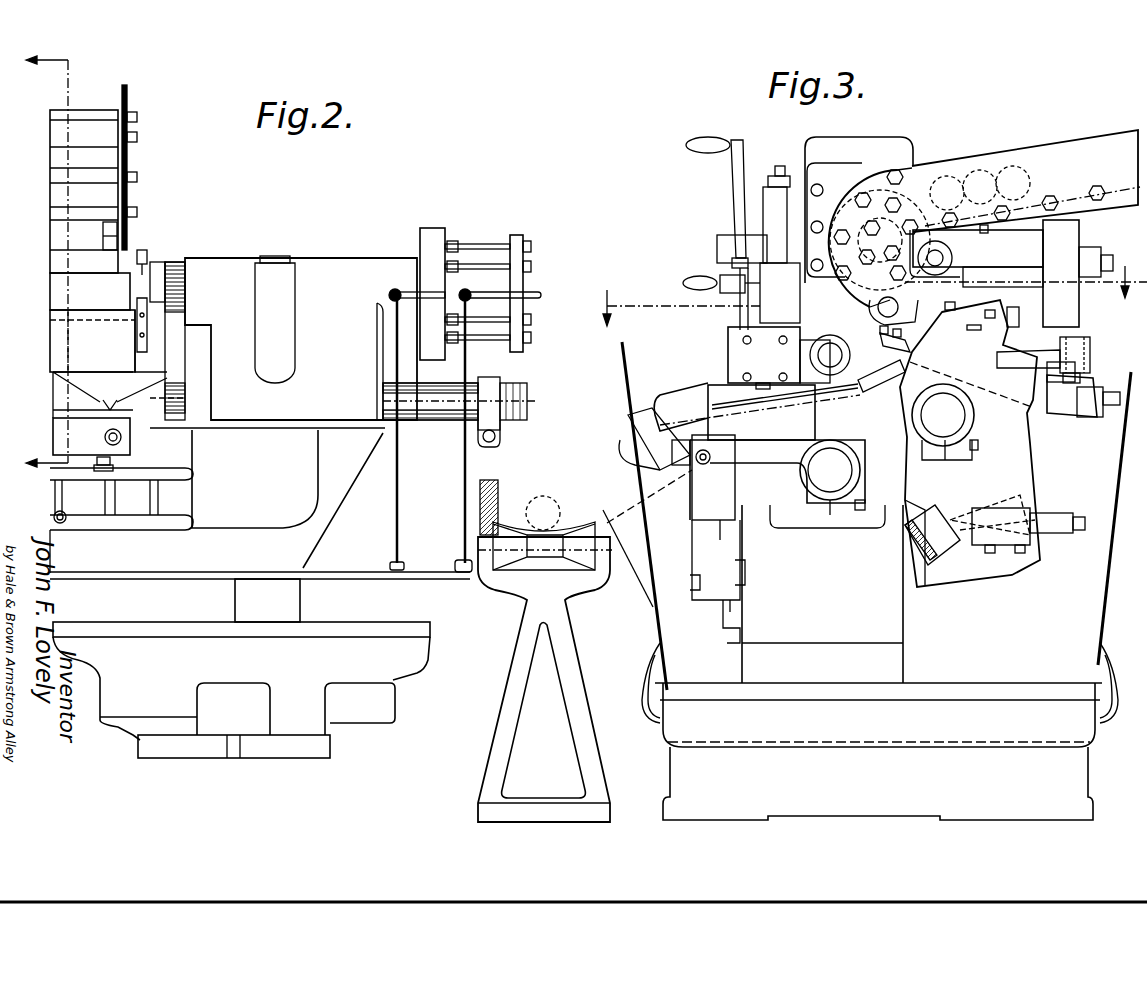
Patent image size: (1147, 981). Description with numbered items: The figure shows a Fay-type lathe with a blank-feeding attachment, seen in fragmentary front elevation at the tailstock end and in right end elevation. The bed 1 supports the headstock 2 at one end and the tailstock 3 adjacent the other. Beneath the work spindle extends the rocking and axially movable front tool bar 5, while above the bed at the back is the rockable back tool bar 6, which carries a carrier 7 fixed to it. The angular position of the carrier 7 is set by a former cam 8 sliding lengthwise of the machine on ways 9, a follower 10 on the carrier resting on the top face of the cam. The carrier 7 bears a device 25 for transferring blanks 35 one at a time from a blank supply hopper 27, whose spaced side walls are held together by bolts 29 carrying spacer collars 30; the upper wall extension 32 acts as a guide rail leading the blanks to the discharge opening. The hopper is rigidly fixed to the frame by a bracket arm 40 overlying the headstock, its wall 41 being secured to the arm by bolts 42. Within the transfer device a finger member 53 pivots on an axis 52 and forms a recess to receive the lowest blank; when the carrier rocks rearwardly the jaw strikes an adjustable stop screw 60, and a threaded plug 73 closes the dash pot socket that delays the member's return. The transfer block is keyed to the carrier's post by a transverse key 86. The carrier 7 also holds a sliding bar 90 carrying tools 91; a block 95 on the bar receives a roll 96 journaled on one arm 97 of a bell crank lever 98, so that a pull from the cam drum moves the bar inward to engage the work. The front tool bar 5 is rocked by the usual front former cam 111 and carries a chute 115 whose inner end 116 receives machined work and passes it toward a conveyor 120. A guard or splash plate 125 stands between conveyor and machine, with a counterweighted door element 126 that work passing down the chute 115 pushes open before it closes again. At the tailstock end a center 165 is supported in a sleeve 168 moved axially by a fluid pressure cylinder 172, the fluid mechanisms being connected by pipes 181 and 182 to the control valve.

In FIG. 2, the bed 1 is at (160, 676).
In FIG. 3, the bed 1 is at (862, 730).
In FIG. 3, the headstock 2 is at (741, 233).
In FIG. 2, the tailstock 3 is at (301, 338).
In FIG. 2, the tool bar 5 is at (459, 412).
In FIG. 3, the tool bar 5 is at (613, 345).
In FIG. 2, the tool bar 6 is at (22, 68).
In FIG. 3, the tool bar 6 is at (945, 422).
In FIG. 3, the carrier 7 is at (970, 443).
In FIG. 3, the former cam 8 is at (948, 545).
In FIG. 3, the ways 9 is at (928, 520).
In FIG. 3, the follower 10 is at (966, 540).
In FIG. 3, the device for transferring blanks 25 is at (885, 237).
In FIG. 3, the blank supply hopper 27 is at (1075, 158).
In FIG. 2, the bolts 29 is at (136, 136).
In FIG. 3, the bolts 29 is at (1097, 194).
In FIG. 2, the spacer collars 30 is at (92, 136).
In FIG. 2, the extension 32 is at (120, 116).
In FIG. 2, the blanks 35 is at (118, 296).
In FIG. 3, the blanks 35 is at (975, 222).
In FIG. 3, the bracket arm 40 is at (897, 148).
In FIG. 3, the wall 41 is at (840, 174).
In FIG. 3, the bolts 42 is at (819, 227).
In FIG. 3, the axis 52 is at (904, 311).
In FIG. 3, the finger member 53 is at (885, 339).
In FIG. 3, the adjustable stop screw 60 is at (938, 260).
In FIG. 3, the threaded plug 73 is at (1024, 310).
In FIG. 3, the transverse key 86 is at (970, 329).
In FIG. 3, the bar 90 is at (1058, 408).
In FIG. 3, the tools 91 is at (879, 383).
In FIG. 3, the block 95 is at (1093, 382).
In FIG. 3, the roll 96 is at (1093, 366).
In FIG. 3, the arm 97 is at (1085, 343).
In FIG. 3, the bell crank lever 98 is at (1017, 353).
In FIG. 2, the front former cam 111 is at (91, 444).
In FIG. 3, the front former cam 111 is at (700, 487).
In FIG. 2, the chute 115 is at (124, 356).
In FIG. 3, the chute 115 is at (680, 400).
In FIG. 3, the inner end of chute 116 is at (845, 392).
In FIG. 2, the conveyor 120 is at (570, 535).
In FIG. 3, the guard or splash plate 125 is at (650, 502).
In FIG. 3, the door element 126 is at (625, 413).
In FIG. 2, the center 165 is at (153, 262).
In FIG. 2, the sleeve 168 is at (178, 268).
In FIG. 2, the fluid pressure cylinder 172 is at (463, 257).
In FIG. 2, the pipe 181 is at (397, 518).
In FIG. 2, the pipe 182 is at (465, 508).